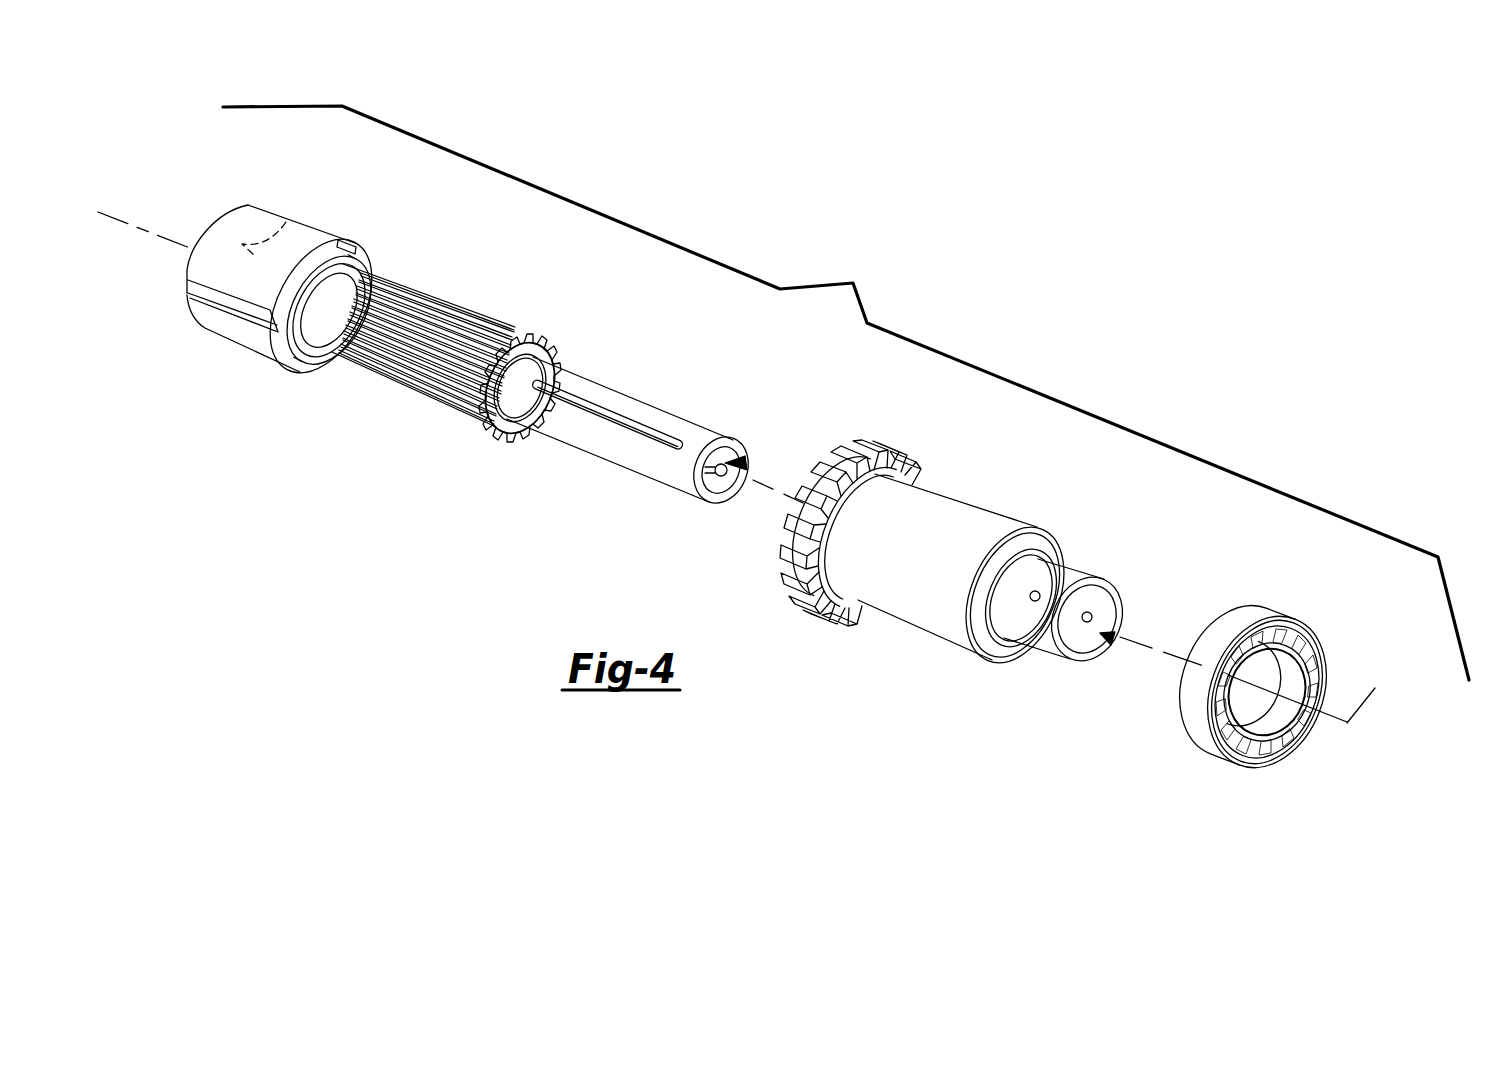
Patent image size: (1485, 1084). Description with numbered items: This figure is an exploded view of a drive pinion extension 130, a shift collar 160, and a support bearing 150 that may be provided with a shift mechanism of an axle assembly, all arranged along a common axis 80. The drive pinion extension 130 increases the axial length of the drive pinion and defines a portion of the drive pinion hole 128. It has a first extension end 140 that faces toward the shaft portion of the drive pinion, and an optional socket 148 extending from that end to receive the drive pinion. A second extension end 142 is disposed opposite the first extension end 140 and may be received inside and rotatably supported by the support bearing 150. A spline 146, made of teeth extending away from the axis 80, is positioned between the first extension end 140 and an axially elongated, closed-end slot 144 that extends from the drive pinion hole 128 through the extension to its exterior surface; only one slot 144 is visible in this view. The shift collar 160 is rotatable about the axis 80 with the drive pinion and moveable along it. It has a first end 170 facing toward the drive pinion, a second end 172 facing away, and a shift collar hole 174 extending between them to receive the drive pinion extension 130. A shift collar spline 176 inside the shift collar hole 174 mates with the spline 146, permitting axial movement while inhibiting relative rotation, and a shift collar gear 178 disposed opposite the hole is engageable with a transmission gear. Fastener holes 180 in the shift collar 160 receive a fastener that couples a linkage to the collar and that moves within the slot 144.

The axis 80 is at (1377, 680).
The drive pinion hole 128 is at (746, 463).
The drive pinion extension 130 is at (638, 402).
The first extension end 140 is at (213, 218).
The second extension end 142 is at (735, 448).
The slot 144 is at (598, 413).
The spline 146 is at (424, 289).
The socket 148 is at (292, 216).
The support bearing 150 is at (1248, 620).
The shift collar 160 is at (945, 553).
The first end 170 is at (830, 463).
The second end 172 is at (1097, 660).
The shift collar hole 174 is at (1116, 639).
The shift collar spline 176 is at (805, 522).
The shift collar gear 178 is at (905, 456).
The fastener hole 180 is at (1030, 596).